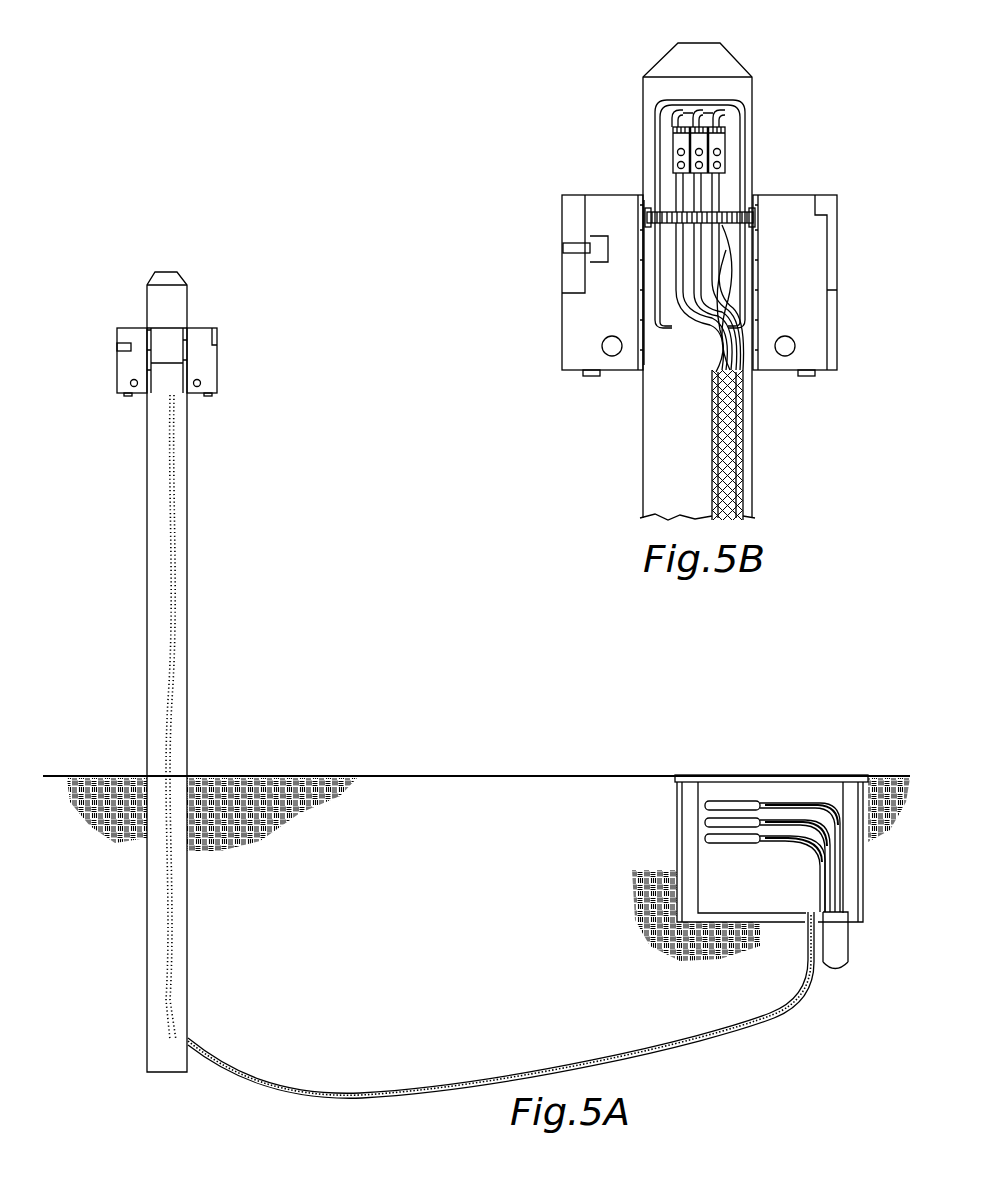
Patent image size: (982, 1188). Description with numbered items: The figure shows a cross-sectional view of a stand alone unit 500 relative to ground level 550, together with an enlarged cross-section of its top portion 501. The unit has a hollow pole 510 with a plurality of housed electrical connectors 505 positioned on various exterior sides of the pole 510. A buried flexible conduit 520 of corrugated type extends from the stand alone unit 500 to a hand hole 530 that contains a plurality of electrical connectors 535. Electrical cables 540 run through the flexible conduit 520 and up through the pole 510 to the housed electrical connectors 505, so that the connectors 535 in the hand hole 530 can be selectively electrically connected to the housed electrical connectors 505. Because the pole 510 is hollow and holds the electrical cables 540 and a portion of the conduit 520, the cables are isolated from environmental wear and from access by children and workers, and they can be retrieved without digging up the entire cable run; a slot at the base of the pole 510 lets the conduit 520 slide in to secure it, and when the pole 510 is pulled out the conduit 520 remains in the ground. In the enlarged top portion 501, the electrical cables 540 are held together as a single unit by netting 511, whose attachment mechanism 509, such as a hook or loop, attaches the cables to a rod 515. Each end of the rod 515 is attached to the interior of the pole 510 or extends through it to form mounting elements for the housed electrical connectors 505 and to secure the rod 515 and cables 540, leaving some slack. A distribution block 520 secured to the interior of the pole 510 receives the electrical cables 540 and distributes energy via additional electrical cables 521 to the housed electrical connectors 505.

In FIG. 5A, the stand alone unit 500 is at (378, 522).
In FIG. 5B, the top portion 501 is at (614, 95).
In FIG. 5A, the top portion 501 is at (204, 283).
In FIG. 5B, the housed electrical connectors 505 is at (560, 212).
In FIG. 5A, the housed electrical connectors 505 is at (165, 330).
In FIG. 5B, the attachment mechanism 509 is at (732, 268).
In FIG. 5B, the pole 510 is at (755, 435).
In FIG. 5A, the pole 510 is at (188, 632).
In FIG. 5B, the netting 511 is at (746, 403).
In FIG. 5B, the rod 515 is at (713, 212).
In FIG. 5B, the flexible conduit 520 is at (723, 143).
In FIG. 5A, the flexible conduit 520 is at (630, 1037).
In FIG. 5B, the additional electrical cables 521 is at (710, 88).
In FIG. 5A, the hand hole 530 is at (760, 775).
In FIG. 5A, the electrical connectors 535 is at (705, 838).
In FIG. 5B, the electrical cables 540 is at (741, 480).
In FIG. 5A, the electrical cables 540 is at (165, 893).
In FIG. 5A, the ground level 550 is at (515, 773).